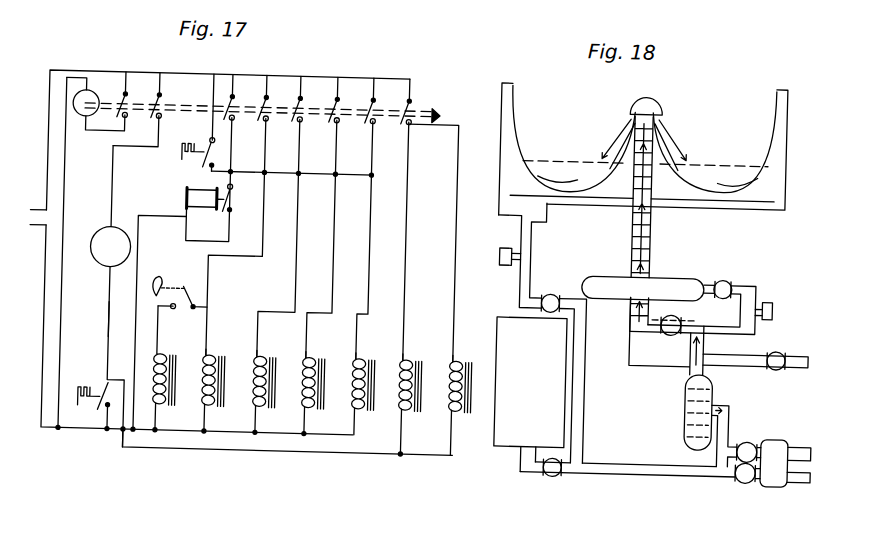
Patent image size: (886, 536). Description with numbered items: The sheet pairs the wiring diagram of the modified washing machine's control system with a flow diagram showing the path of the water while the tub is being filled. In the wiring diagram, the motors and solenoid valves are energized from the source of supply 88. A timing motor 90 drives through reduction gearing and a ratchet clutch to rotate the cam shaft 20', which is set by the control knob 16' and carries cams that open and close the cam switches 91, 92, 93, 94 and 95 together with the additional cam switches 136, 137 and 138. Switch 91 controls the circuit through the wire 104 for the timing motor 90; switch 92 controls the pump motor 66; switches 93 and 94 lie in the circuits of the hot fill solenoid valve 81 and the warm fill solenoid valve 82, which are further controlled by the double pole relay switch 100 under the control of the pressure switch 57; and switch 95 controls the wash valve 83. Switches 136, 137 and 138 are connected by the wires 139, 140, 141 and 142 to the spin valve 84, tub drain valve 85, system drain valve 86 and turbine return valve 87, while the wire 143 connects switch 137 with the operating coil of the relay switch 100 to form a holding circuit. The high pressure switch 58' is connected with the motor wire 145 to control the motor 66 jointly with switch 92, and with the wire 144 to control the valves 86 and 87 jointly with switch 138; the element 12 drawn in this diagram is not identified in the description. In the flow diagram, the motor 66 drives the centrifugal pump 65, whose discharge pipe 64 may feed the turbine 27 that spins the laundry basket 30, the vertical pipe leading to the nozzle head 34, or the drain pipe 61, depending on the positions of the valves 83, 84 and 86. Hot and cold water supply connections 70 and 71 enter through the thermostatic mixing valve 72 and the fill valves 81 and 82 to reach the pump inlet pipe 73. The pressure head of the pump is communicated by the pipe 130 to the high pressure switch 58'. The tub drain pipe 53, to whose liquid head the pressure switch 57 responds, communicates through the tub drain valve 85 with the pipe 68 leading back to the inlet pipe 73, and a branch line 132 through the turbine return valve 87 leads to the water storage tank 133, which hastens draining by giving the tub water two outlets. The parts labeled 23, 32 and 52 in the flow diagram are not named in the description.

In FIG. 17, the timing motor 90 is at (82, 95).
In FIG. 17, the cam switch 91 is at (125, 90).
In FIG. 17, the cam switch 92 is at (159, 90).
In FIG. 17, the cam switch 93 is at (232, 90).
In FIG. 17, the cam switch 94 is at (266, 90).
In FIG. 17, the cam switch 95 is at (300, 90).
In FIG. 17, the cam switch 136 is at (337, 91).
In FIG. 17, the cam switch 137 is at (373, 91).
In FIG. 17, the cam switch 138 is at (408, 91).
In FIG. 17, the cam shaft 20' is at (276, 88).
In FIG. 17, the control knob 16' is at (461, 110).
In FIG. 17, the wire 104 is at (67, 170).
In FIG. 17, the pressure switch 57 is at (186, 160).
In FIG. 18, the pressure switch 57 is at (509, 246).
In FIG. 17, the source of supply 88 is at (41, 221).
In FIG. 17, the double pole relay switch 100 is at (219, 208).
In FIG. 17, the electric motor 66 is at (106, 251).
In FIG. 17, the thermostat switch 12 is at (179, 281).
In FIG. 17, the motor wire 145 is at (115, 313).
In FIG. 17, the high pressure switch 58' is at (88, 387).
In FIG. 18, the high pressure switch 58' is at (781, 295).
In FIG. 17, the hot fill solenoid valve 81 is at (194, 344).
In FIG. 18, the hot fill solenoid valve 81 is at (757, 436).
In FIG. 17, the warm fill solenoid valve 82 is at (243, 344).
In FIG. 18, the warm fill solenoid valve 82 is at (752, 478).
In FIG. 17, the wash valve 83 is at (294, 344).
In FIG. 18, the wash valve 83 is at (672, 330).
In FIG. 17, the spin valve 84 is at (343, 344).
In FIG. 18, the spin valve 84 is at (732, 276).
In FIG. 17, the tub drain valve 85 is at (367, 404).
In FIG. 18, the tub drain valve 85 is at (557, 293).
In FIG. 17, the system drain valve 86 is at (414, 404).
In FIG. 18, the system drain valve 86 is at (785, 346).
In FIG. 17, the turbine return valve 87 is at (464, 404).
In FIG. 18, the turbine return valve 87 is at (556, 478).
In FIG. 17, the wire 139 is at (338, 279).
In FIG. 17, the wire 140 is at (374, 291).
In FIG. 17, the wire 141 is at (411, 270).
In FIG. 17, the wire 142 is at (460, 244).
In FIG. 17, the wire 143 is at (370, 172).
In FIG. 17, the wire 144 is at (250, 448).
In FIG. 18, the wire 144 is at (636, 318).
In FIG. 18, the nozzle head 34 is at (646, 93).
In FIG. 18, the tank 23 is at (800, 68).
In FIG. 18, the laundry basket 30 is at (776, 96).
In FIG. 18, the riser column 32 is at (654, 216).
In FIG. 18, the tank bottom plate 52 is at (553, 208).
In FIG. 18, the turbine 27 is at (619, 259).
In FIG. 18, the drain pipe 53 is at (525, 290).
In FIG. 18, the water storage tank 133 is at (530, 382).
In FIG. 18, the branch line 132 is at (530, 462).
In FIG. 18, the pipe 68 is at (665, 472).
In FIG. 18, the pipe 130 is at (693, 308).
In FIG. 18, the discharge pipe 64 is at (695, 368).
In FIG. 18, the centrifugal pump 65 is at (693, 408).
In FIG. 18, the inlet pipe 73 is at (738, 404).
In FIG. 18, the thermostatic mixing valve 72 is at (784, 433).
In FIG. 18, the hot water supply pipe connection 70 is at (818, 440).
In FIG. 18, the cold water supply pipe connection 71 is at (812, 478).
In FIG. 18, the drain pipe 61 is at (803, 362).